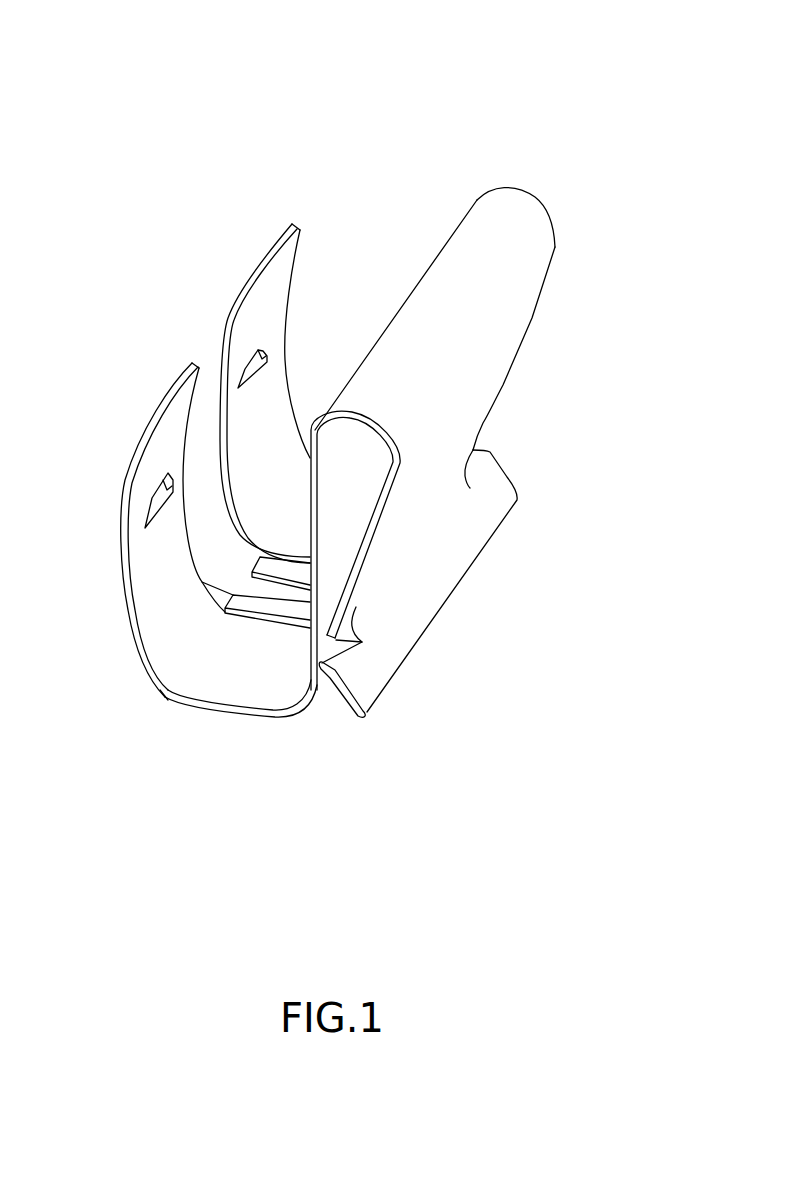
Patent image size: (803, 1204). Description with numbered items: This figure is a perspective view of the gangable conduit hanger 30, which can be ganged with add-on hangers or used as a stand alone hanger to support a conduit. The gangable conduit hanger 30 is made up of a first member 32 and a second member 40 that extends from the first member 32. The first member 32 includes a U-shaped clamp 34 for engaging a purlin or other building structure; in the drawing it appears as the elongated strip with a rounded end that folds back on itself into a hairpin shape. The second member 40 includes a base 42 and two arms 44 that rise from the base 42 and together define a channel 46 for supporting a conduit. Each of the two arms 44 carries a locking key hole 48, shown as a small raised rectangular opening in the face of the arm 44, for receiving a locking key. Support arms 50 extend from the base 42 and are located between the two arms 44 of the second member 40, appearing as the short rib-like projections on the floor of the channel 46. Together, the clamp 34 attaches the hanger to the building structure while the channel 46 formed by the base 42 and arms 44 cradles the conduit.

The gangable conduit hanger 30 is at (140, 120).
The first member 32 is at (530, 320).
The U-shaped clamp 34 is at (482, 385).
The second member 40 is at (127, 585).
The base 42 is at (242, 688).
The arm 44 is at (160, 597).
The channel 46 is at (165, 675).
The locking key hole 48 is at (258, 349).
The support arm 50 is at (215, 582).